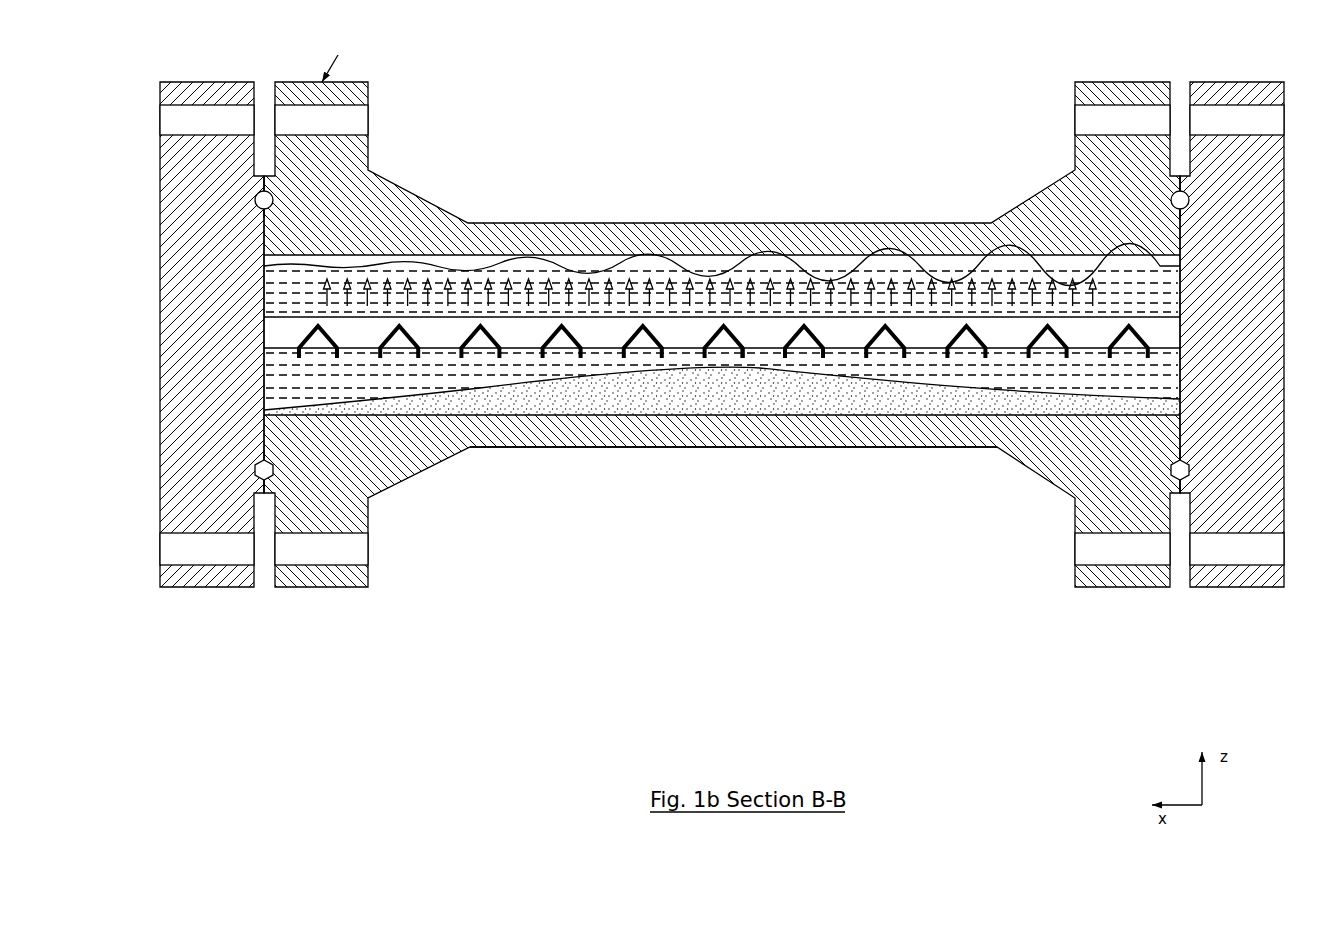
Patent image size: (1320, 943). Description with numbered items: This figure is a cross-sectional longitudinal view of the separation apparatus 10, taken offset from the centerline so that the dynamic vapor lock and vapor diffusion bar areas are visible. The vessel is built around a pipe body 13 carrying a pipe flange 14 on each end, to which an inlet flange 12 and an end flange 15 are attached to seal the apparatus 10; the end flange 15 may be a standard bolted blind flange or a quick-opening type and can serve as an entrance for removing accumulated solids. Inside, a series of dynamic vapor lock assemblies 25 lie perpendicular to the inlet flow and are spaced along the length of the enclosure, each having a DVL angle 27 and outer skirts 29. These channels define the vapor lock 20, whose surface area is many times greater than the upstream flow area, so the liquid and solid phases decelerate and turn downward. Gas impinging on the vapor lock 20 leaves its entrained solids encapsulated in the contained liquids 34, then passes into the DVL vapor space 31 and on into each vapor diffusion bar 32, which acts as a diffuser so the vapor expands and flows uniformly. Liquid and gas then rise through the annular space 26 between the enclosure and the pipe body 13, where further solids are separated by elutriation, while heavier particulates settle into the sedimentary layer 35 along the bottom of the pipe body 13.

The separation apparatus 10 is at (495, 62).
The inlet flange 12 is at (1210, 588).
The pipe body 13 is at (520, 448).
The pipe flange 14 is at (310, 588).
The end flange 15 is at (220, 588).
The vapor lock 20 is at (770, 350).
The dynamic vapor lock assembly 25 is at (975, 340).
The annular space 26 is at (830, 262).
The DVL angle 27 is at (728, 343).
The DVL outer skirt 29 is at (742, 363).
The DVL vapor space 31 is at (560, 342).
The vapor diffusion bar 32 is at (637, 315).
The contained liquids 34 is at (285, 375).
The sedimentary layer 35 is at (285, 408).